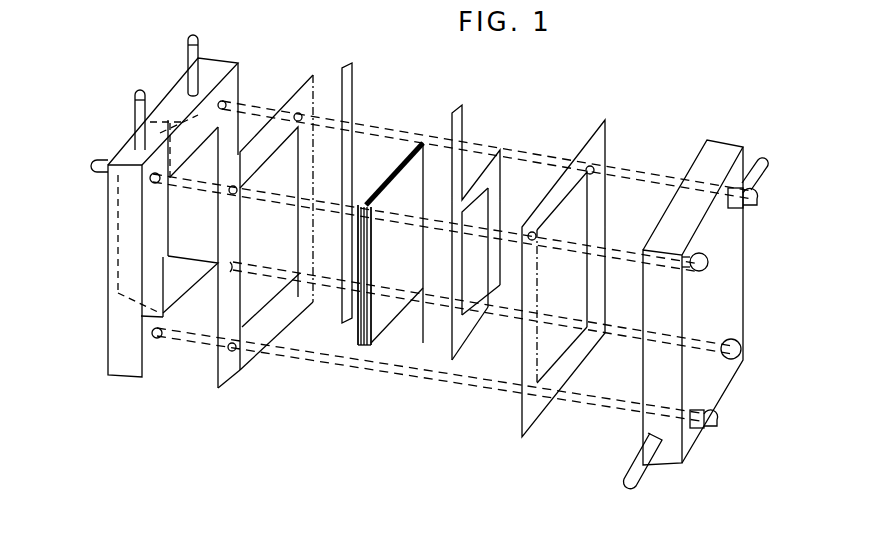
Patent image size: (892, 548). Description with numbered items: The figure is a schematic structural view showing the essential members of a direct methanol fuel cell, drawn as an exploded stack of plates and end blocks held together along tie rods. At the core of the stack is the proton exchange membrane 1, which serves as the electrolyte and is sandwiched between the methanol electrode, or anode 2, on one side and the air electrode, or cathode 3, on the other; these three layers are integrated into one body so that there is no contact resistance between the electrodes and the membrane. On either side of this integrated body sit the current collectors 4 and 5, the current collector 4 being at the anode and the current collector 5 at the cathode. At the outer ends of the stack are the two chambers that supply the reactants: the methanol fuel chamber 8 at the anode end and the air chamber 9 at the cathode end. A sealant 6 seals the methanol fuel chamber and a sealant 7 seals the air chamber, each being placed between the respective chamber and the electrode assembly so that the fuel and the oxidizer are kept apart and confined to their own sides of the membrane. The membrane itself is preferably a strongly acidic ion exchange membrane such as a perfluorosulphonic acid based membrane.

The proton exchange membrane 1 is at (365, 350).
The methanol electrode 2 is at (357, 347).
The air electrode 3 is at (372, 350).
The current collector 4 is at (352, 85).
The current collector 5 is at (503, 152).
The sealant 6 is at (240, 372).
The sealant 7 is at (543, 412).
The methanol fuel chamber 8 is at (128, 380).
The air chamber 9 is at (729, 140).